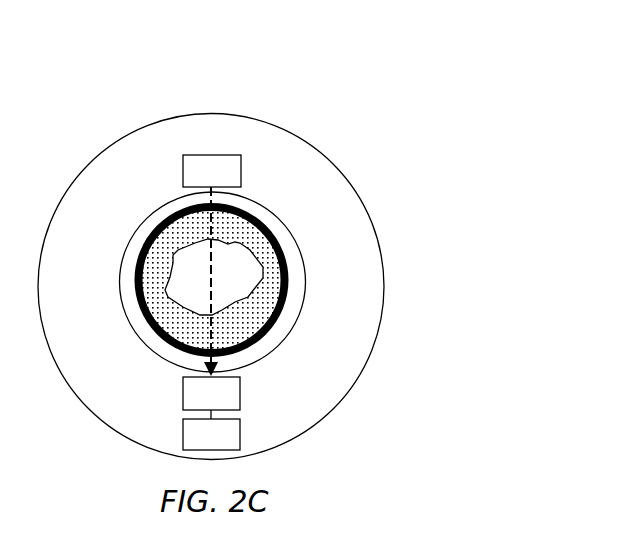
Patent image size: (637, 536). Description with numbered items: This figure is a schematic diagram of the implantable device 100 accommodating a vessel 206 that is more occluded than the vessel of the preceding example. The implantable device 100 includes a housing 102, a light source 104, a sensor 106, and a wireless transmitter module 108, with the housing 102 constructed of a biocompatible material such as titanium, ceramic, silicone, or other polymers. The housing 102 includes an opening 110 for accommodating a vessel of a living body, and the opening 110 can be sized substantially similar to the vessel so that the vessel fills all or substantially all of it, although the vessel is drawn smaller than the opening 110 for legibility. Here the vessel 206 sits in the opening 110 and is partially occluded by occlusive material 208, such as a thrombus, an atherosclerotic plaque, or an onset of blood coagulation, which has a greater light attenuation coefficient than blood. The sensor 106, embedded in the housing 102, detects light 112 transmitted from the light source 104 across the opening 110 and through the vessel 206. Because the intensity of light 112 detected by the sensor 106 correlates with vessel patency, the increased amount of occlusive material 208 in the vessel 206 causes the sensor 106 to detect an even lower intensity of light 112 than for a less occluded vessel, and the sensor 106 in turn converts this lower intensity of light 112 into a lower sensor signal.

The implantable device 100 is at (350, 116).
The housing 102 is at (211, 287).
The light source 104 is at (212, 171).
The sensor 106 is at (211, 393).
The wireless transmitter module 108 is at (211, 430).
The opening 110 is at (132, 282).
The light 112 is at (237, 283).
The vessel 206 is at (277, 237).
The occlusive material 208 is at (268, 292).